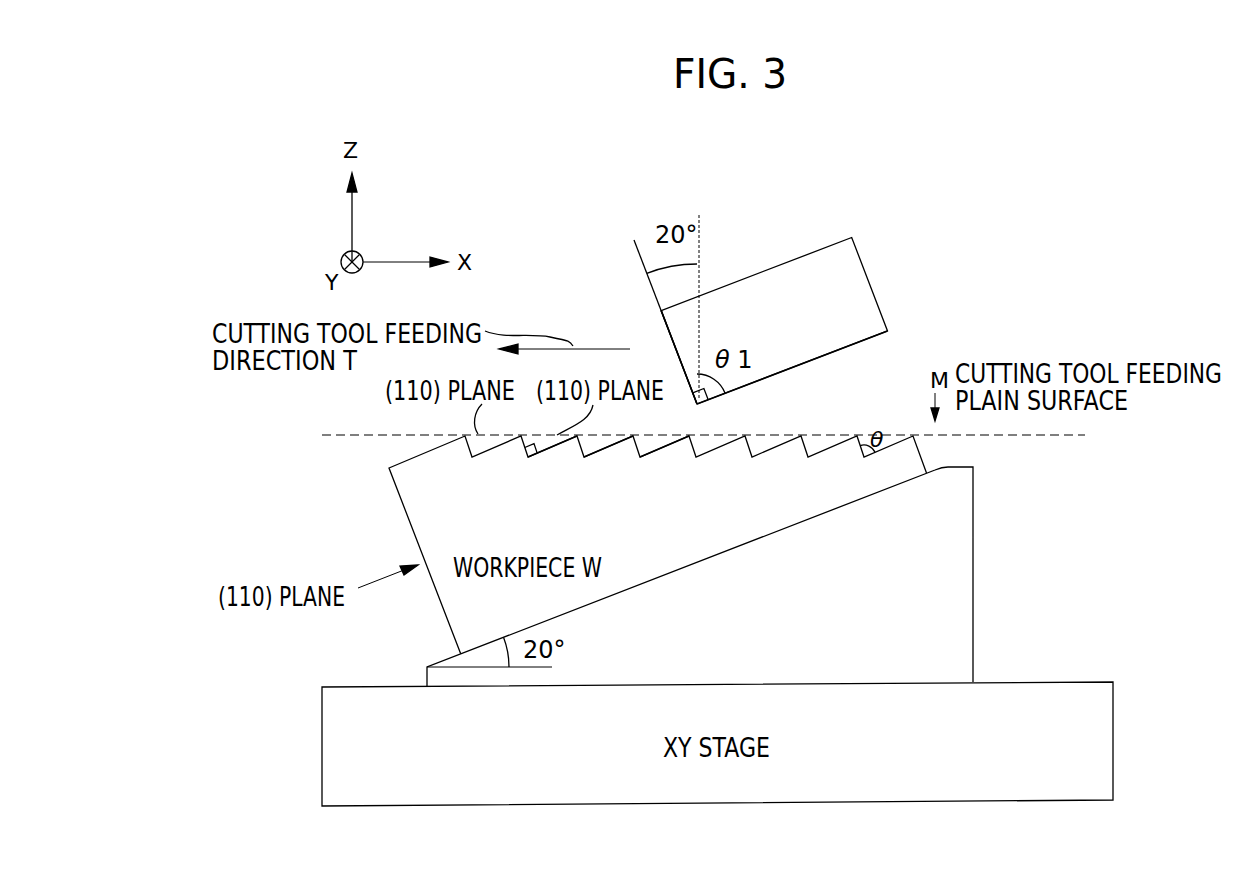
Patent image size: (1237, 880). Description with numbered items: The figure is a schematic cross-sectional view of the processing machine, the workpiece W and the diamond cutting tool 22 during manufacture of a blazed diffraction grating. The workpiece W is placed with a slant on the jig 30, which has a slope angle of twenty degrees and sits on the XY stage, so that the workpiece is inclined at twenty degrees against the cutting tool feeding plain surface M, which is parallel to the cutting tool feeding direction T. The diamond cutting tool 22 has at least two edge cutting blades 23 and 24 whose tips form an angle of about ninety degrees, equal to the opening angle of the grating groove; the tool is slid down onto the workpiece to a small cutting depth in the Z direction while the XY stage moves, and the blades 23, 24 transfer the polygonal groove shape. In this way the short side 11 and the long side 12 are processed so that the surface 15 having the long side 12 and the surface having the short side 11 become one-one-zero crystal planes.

The short side 11 is at (573, 447).
The long side 12 is at (603, 448).
The surface having the long side 15 is at (660, 450).
The diamond cutting tool 22 is at (840, 267).
The edge cutting blade 23 is at (673, 343).
The edge cutting blade 24 is at (807, 362).
The jig 30 is at (960, 581).